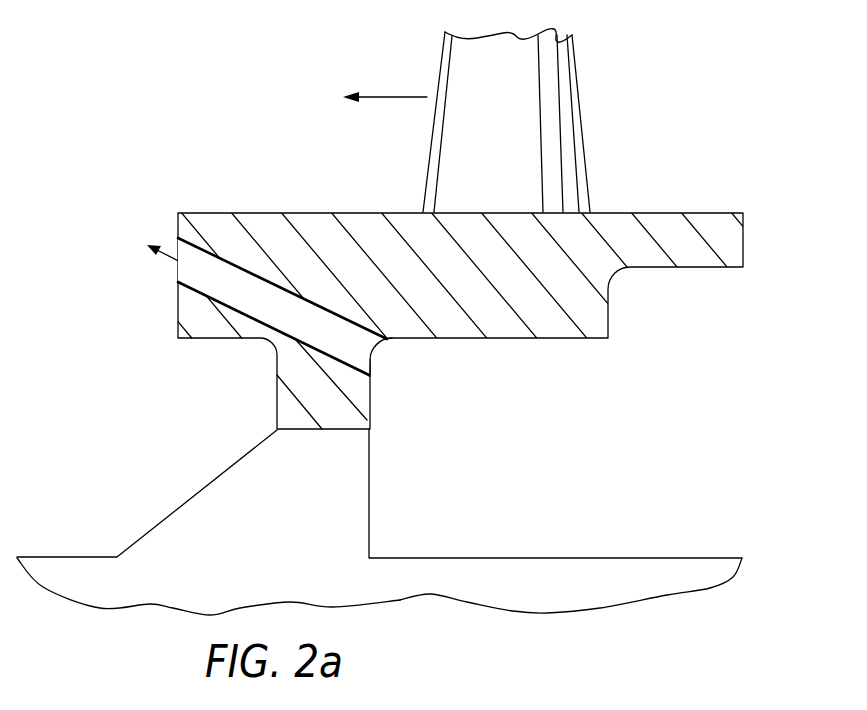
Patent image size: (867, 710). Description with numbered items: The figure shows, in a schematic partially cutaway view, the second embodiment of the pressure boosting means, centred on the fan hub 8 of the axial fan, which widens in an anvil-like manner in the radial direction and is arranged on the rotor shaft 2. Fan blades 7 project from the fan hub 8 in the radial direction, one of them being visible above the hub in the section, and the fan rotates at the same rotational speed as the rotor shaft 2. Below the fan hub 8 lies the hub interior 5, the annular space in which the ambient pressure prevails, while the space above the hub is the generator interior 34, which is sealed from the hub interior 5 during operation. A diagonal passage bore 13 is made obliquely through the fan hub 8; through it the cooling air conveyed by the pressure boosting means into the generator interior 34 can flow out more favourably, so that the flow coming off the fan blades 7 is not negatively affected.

The rotor shaft 2 is at (275, 544).
The hub interior 5 is at (553, 464).
The fan blades 7 is at (565, 110).
The fan hub 8 is at (597, 319).
The diagonal passage bore 13 is at (364, 350).
The generator interior 34 is at (221, 150).